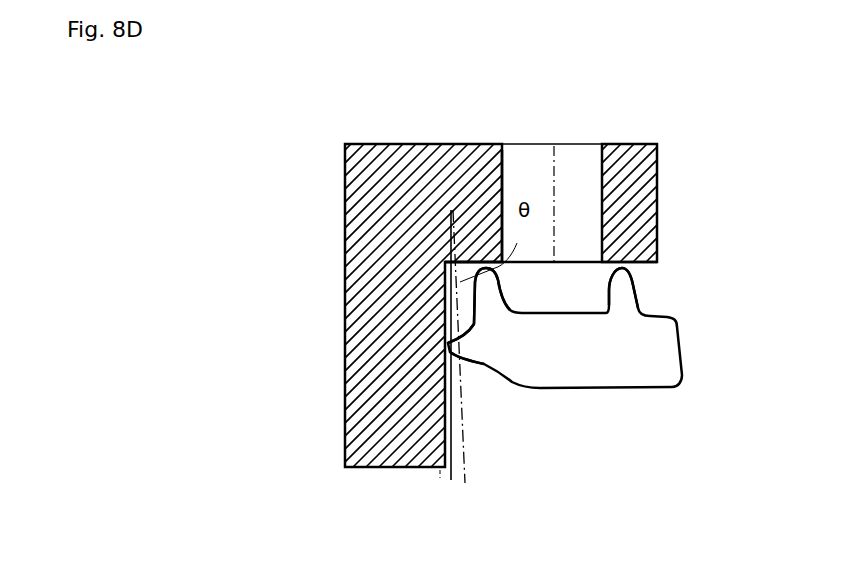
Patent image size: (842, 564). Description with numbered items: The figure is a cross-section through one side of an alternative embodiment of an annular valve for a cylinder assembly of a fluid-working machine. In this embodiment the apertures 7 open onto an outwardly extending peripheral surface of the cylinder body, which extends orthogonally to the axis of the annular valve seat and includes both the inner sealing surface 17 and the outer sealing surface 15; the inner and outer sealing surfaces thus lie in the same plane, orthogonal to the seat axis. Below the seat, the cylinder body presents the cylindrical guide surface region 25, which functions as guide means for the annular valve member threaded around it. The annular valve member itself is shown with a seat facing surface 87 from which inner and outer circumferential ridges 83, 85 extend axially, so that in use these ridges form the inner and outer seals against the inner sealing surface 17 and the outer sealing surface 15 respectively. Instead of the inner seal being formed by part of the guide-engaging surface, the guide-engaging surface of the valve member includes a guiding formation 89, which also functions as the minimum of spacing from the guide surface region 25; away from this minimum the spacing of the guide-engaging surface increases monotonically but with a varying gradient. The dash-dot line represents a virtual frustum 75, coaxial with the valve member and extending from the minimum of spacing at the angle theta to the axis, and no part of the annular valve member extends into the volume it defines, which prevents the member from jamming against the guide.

The aperture 7 is at (554, 147).
The outer sealing surface 15 is at (629, 255).
The inner sealing surface 17 is at (483, 262).
The guide surface region 25 is at (443, 395).
The virtual frustum 75 is at (467, 478).
The inner circumferential ridge 83 is at (485, 283).
The outer circumferential ridge 85 is at (625, 286).
The seat facing surface 87 is at (555, 312).
The guiding formation 89 is at (450, 343).